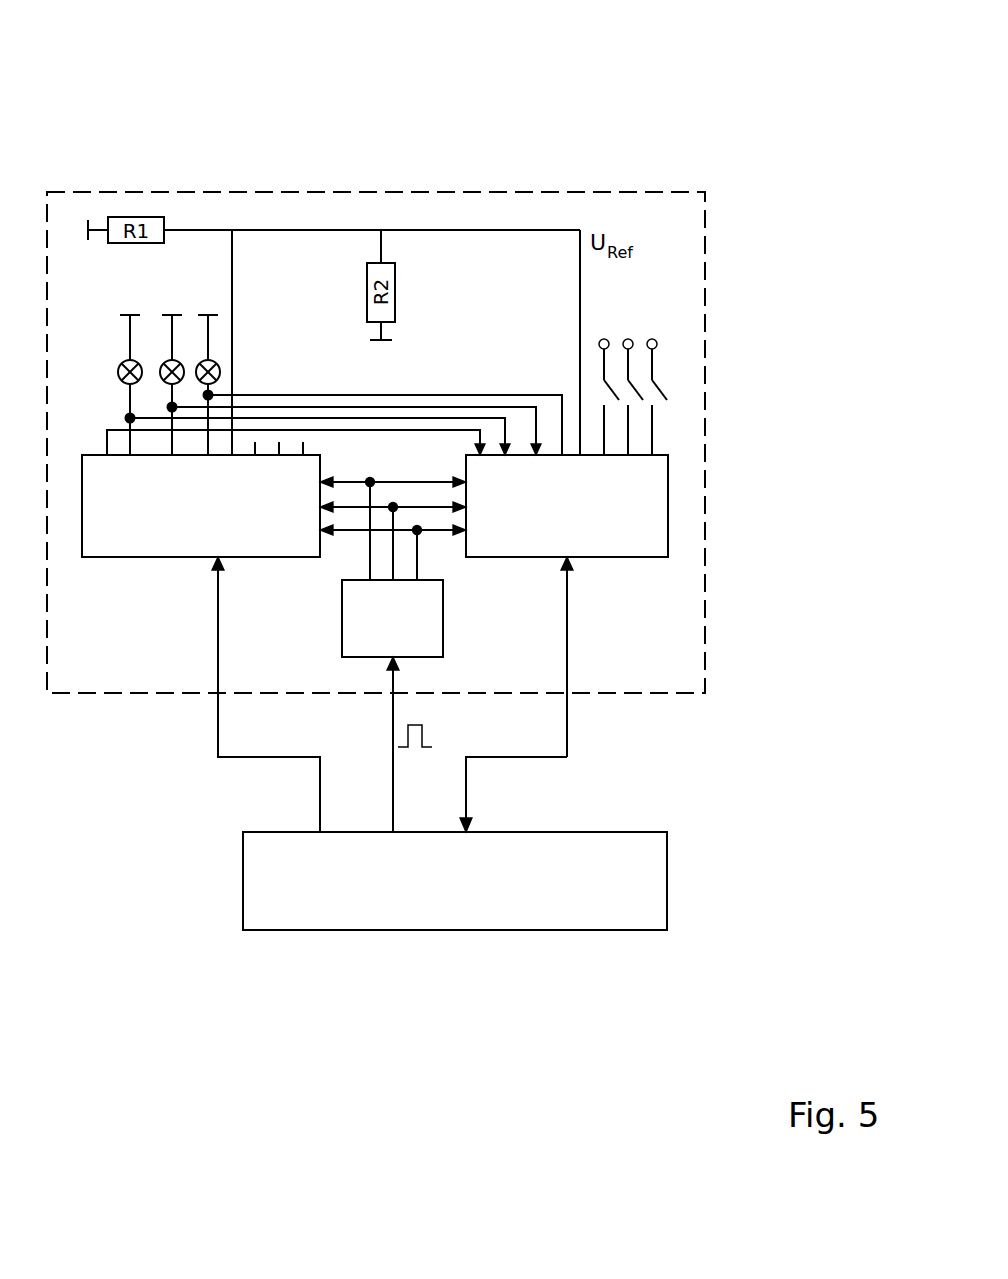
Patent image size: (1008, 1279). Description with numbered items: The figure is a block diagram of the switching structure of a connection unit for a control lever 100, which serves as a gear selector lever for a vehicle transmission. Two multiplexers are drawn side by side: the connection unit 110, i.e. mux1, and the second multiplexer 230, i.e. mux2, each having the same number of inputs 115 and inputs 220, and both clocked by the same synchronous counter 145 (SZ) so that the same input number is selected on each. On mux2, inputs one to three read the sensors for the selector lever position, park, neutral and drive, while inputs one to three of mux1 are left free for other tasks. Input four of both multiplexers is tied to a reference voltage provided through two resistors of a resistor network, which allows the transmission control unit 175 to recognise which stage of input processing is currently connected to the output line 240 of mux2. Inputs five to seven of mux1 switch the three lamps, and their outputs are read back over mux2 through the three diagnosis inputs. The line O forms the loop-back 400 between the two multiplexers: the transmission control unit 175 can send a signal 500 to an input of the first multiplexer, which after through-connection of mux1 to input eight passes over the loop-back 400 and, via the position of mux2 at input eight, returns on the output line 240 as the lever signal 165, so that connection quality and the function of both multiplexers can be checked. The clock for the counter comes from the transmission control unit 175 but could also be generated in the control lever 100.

The control lever 100 is at (552, 192).
The connection unit 110 is at (147, 557).
The inputs 115 is at (672, 443).
The synchronous counter 145 is at (443, 617).
The lever signal 165 is at (517, 757).
The transmission control unit 175 is at (355, 930).
The inputs of the second multiplexer 220 is at (320, 446).
The second multiplexer 230 is at (668, 507).
The output line 240 is at (567, 728).
The loop-back 400 is at (393, 455).
The signal 500 is at (268, 757).